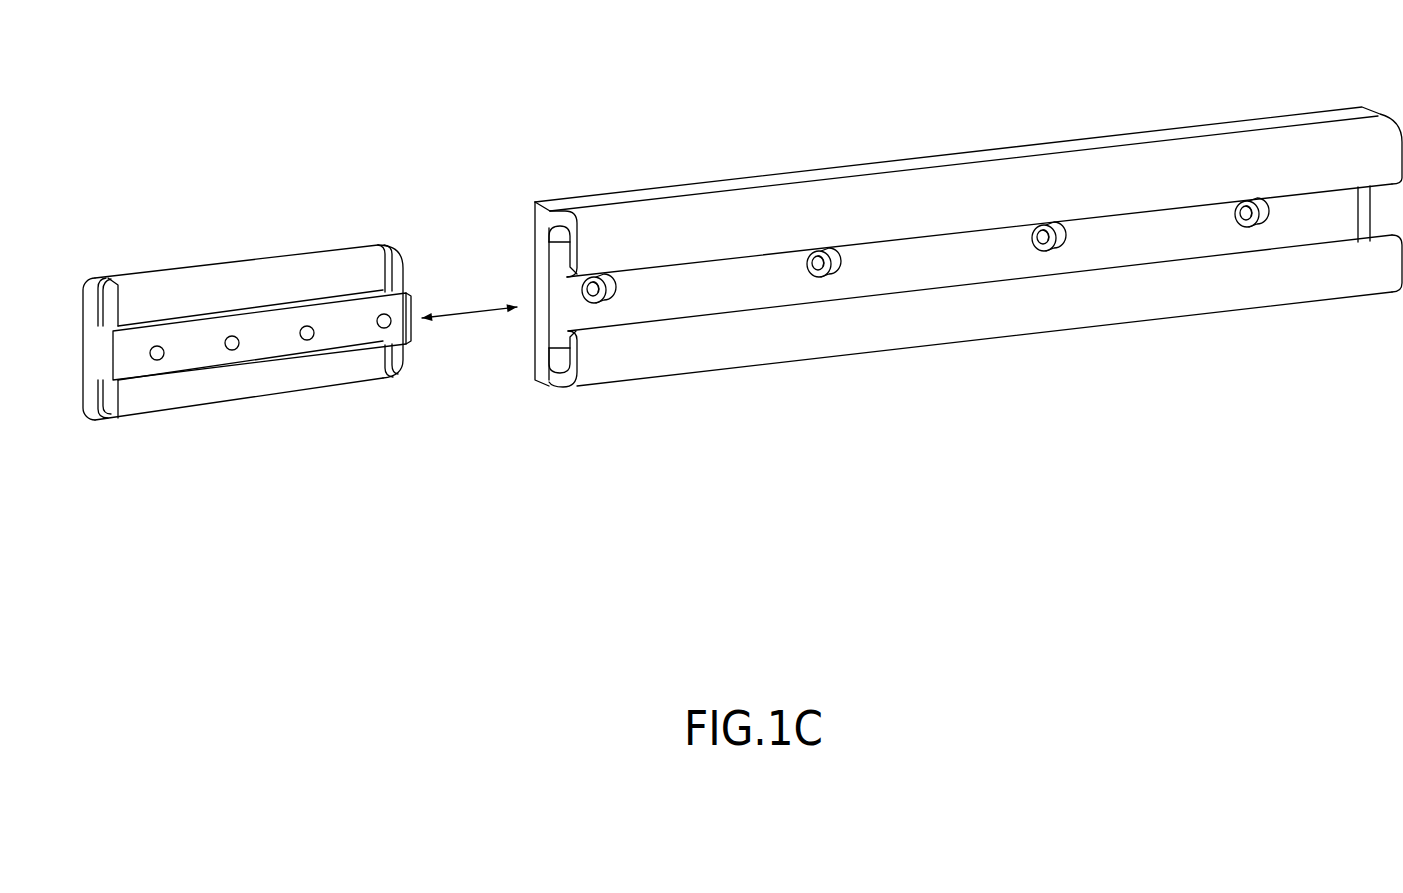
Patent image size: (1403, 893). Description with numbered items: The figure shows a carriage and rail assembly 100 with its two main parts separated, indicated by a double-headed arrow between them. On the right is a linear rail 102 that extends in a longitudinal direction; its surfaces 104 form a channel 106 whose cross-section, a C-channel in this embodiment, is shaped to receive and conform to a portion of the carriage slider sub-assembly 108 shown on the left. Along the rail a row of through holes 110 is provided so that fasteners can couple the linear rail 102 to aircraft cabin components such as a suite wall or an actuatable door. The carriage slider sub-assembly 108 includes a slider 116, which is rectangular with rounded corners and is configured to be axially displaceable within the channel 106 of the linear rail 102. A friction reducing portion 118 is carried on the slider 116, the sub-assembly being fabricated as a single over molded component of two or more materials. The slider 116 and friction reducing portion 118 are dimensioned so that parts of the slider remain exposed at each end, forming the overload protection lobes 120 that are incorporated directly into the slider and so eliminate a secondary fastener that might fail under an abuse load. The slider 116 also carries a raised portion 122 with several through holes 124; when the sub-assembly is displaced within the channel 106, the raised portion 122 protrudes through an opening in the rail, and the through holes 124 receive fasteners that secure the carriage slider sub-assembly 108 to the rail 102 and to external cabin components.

The carriage and rail assembly 100 is at (142, 82).
The linear rail 102 is at (1283, 86).
The surfaces 104 is at (553, 216).
The channel 106 is at (560, 326).
The carriage slider sub-assembly 108 is at (101, 201).
The through holes 110 is at (832, 268).
The slider 116 is at (349, 217).
The friction reducing portion 118 is at (147, 284).
The overload protection lobes 120 is at (107, 414).
The raised portion 122 is at (198, 362).
The through holes 124 is at (302, 340).